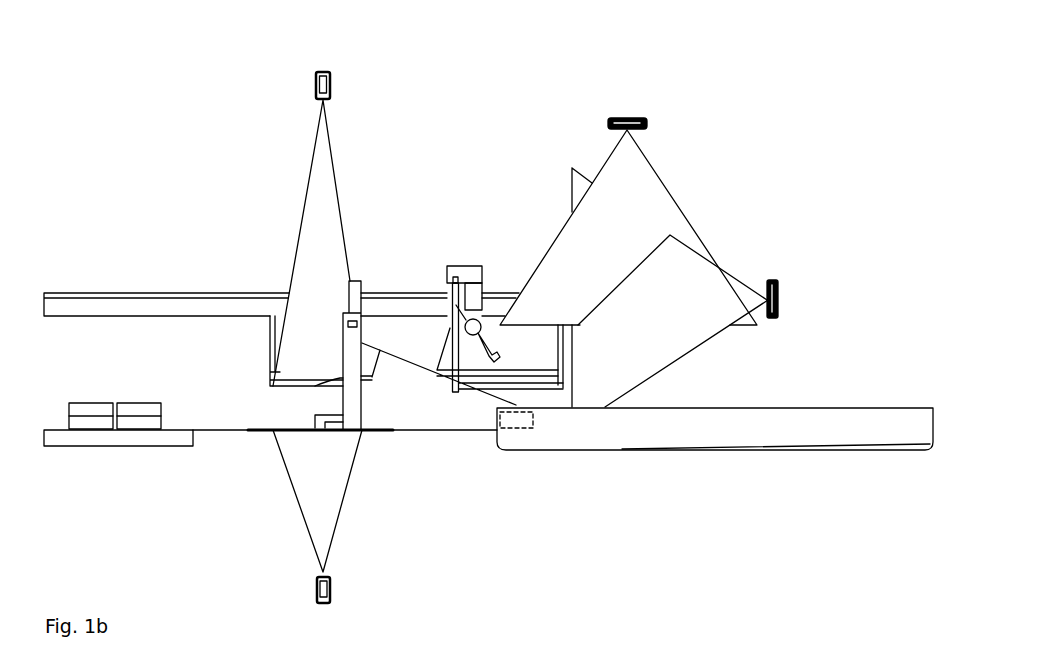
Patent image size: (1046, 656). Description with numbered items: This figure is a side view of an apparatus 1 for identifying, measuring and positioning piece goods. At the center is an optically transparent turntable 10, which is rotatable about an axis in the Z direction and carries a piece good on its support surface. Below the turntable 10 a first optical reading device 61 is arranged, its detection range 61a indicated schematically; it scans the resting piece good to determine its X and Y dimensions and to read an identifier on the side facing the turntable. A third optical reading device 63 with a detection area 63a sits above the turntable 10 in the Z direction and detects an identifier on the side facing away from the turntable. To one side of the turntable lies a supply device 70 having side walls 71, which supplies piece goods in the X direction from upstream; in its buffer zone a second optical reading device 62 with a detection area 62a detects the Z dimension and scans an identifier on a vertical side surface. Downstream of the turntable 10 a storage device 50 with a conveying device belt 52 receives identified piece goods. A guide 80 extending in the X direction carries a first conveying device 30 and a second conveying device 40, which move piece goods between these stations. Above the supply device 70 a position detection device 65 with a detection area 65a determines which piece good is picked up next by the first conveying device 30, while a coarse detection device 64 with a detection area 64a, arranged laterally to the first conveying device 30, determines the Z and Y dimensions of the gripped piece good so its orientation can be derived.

The apparatus 1 is at (165, 155).
The turntable 10 is at (380, 433).
The first conveying device 30 is at (472, 258).
The second conveying device 40 is at (366, 258).
The storage device 50 is at (67, 462).
The conveying device belt 52 is at (117, 441).
The first optical reading device 61 is at (330, 593).
The detection range 61a is at (322, 518).
The second optical reading device 62 is at (517, 423).
The detection area 62a is at (447, 415).
The third optical reading device 63 is at (315, 80).
The detection area 63a is at (322, 207).
The coarse detection device 64 is at (773, 280).
The detection area 64a is at (693, 278).
The position detection device 65 is at (645, 118).
The detection area 65a is at (638, 178).
The supply device 70 is at (797, 465).
The side walls 71 is at (708, 427).
The guide 80 is at (112, 297).